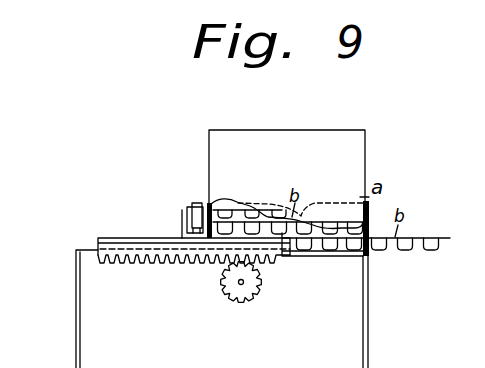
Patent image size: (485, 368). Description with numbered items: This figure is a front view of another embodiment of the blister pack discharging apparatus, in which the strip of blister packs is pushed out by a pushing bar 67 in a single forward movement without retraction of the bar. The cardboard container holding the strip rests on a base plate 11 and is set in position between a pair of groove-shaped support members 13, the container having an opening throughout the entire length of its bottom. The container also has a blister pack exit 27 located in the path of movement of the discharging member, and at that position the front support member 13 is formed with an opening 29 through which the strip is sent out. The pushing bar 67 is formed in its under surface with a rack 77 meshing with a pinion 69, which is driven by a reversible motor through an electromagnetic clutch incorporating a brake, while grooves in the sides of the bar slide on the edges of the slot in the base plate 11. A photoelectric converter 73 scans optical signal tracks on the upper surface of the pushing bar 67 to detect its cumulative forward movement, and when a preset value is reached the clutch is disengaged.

The base plate 11 is at (323, 257).
The support member 13 is at (240, 202).
The blister pack exit 27 is at (368, 254).
The opening 29 is at (371, 252).
The pushing bar 67 is at (133, 245).
The pinion 69 is at (254, 297).
The photoelectric converter 73 is at (198, 203).
The rack 77 is at (199, 266).